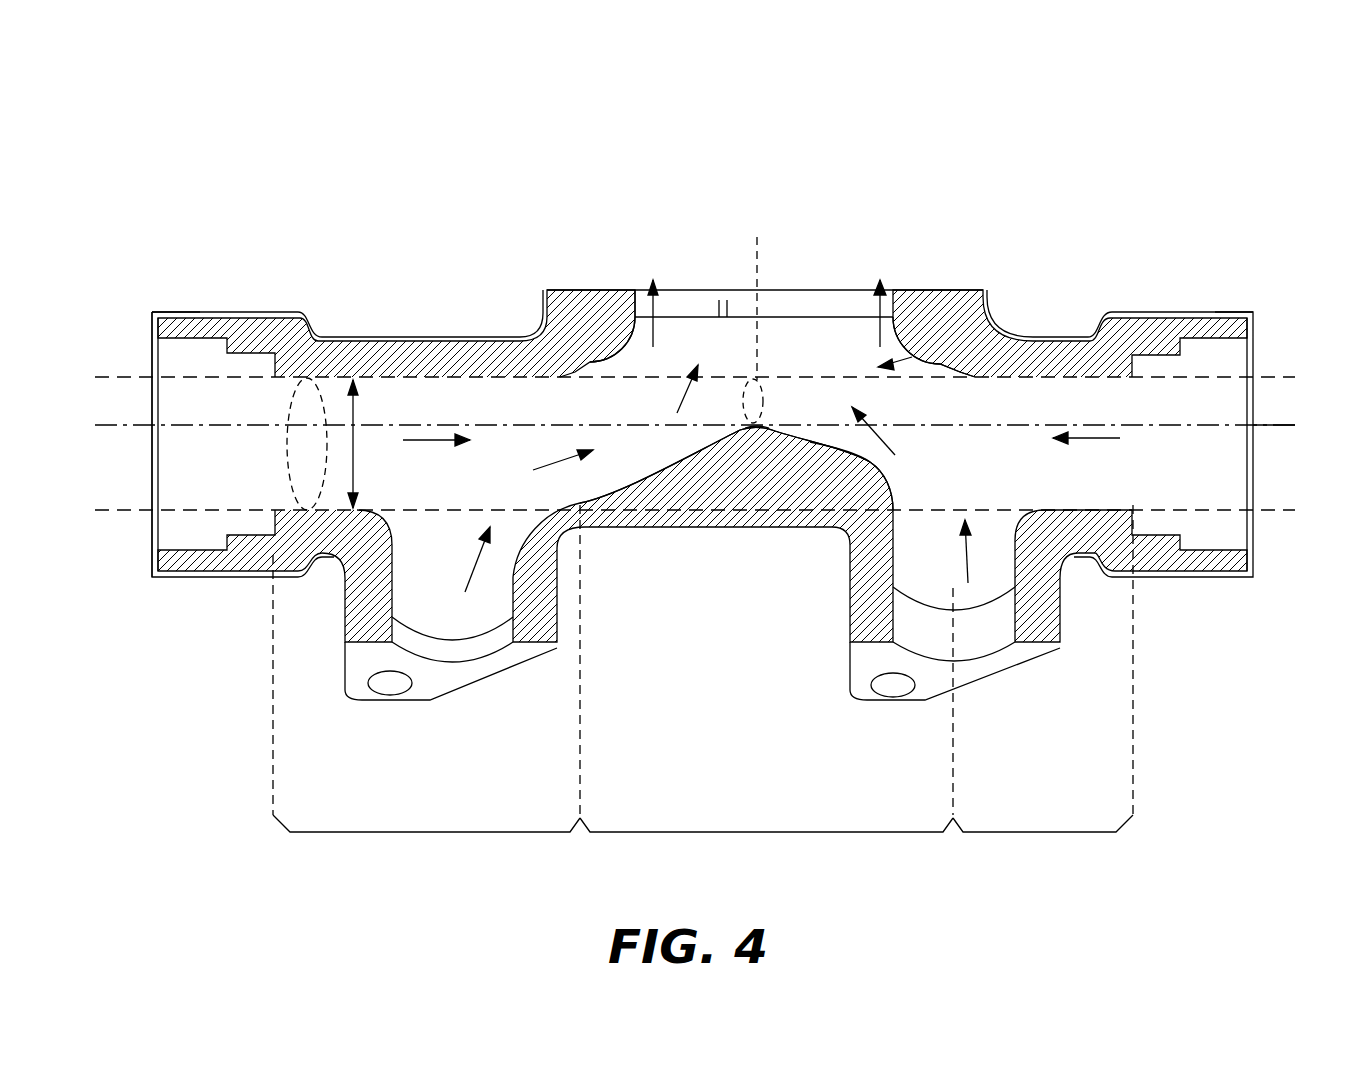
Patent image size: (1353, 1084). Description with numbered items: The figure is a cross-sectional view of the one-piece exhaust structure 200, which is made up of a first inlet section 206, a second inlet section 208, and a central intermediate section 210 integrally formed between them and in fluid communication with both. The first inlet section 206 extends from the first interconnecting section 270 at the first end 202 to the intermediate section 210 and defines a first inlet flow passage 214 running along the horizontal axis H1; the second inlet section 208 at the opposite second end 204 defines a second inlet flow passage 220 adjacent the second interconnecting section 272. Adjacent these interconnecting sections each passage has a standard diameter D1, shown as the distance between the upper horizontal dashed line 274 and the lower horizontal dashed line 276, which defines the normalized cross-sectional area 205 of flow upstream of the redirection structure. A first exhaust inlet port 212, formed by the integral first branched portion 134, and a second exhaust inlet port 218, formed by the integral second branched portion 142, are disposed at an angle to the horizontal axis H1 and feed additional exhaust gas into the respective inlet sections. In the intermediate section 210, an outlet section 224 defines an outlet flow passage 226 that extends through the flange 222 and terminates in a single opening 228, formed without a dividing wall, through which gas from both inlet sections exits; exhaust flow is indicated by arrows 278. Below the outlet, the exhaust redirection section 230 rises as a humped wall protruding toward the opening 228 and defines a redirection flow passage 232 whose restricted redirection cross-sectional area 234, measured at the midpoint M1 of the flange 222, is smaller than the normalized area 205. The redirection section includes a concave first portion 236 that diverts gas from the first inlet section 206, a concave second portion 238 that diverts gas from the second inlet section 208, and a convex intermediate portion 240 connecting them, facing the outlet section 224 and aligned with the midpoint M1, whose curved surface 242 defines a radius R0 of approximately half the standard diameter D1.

The exhaust structure 200 is at (1137, 78).
The first end 202 is at (248, 297).
The second end 204 is at (1152, 300).
The normalized cross-sectional area 205 is at (292, 482).
The first inlet section 206 is at (422, 832).
The second inlet section 208 is at (1049, 832).
The intermediate section 210 is at (789, 832).
The first exhaust inlet port 212 is at (458, 632).
The first inlet flow passage 214 is at (292, 388).
The second exhaust inlet port 218 is at (930, 588).
The second inlet flow passage 220 is at (1092, 473).
The flange 222 is at (907, 290).
The outlet section 224 is at (773, 325).
The outlet flow passage 226 is at (692, 330).
The opening 228 is at (720, 292).
The exhaust redirection section 230 is at (786, 457).
The redirection flow passage 232 is at (952, 380).
The redirection cross-sectional area 234 is at (807, 430).
The first portion 236 is at (660, 473).
The second portion 238 is at (848, 448).
The intermediate portion 240 is at (743, 423).
The curved surface 242 is at (767, 402).
The first interconnecting section 270 is at (199, 300).
The second interconnecting section 272 is at (1215, 280).
The upper horizontal dashed line 274 is at (122, 377).
The lower horizontal dashed line 276 is at (122, 510).
The arrows 278 is at (467, 592).
The first branched portion 134 is at (423, 628).
The second branched portion 142 is at (973, 635).
The midpoint M1 is at (757, 237).
The standard diameter D1 is at (357, 417).
The radius R0 is at (763, 429).
The horizontal axis H1 is at (1288, 425).